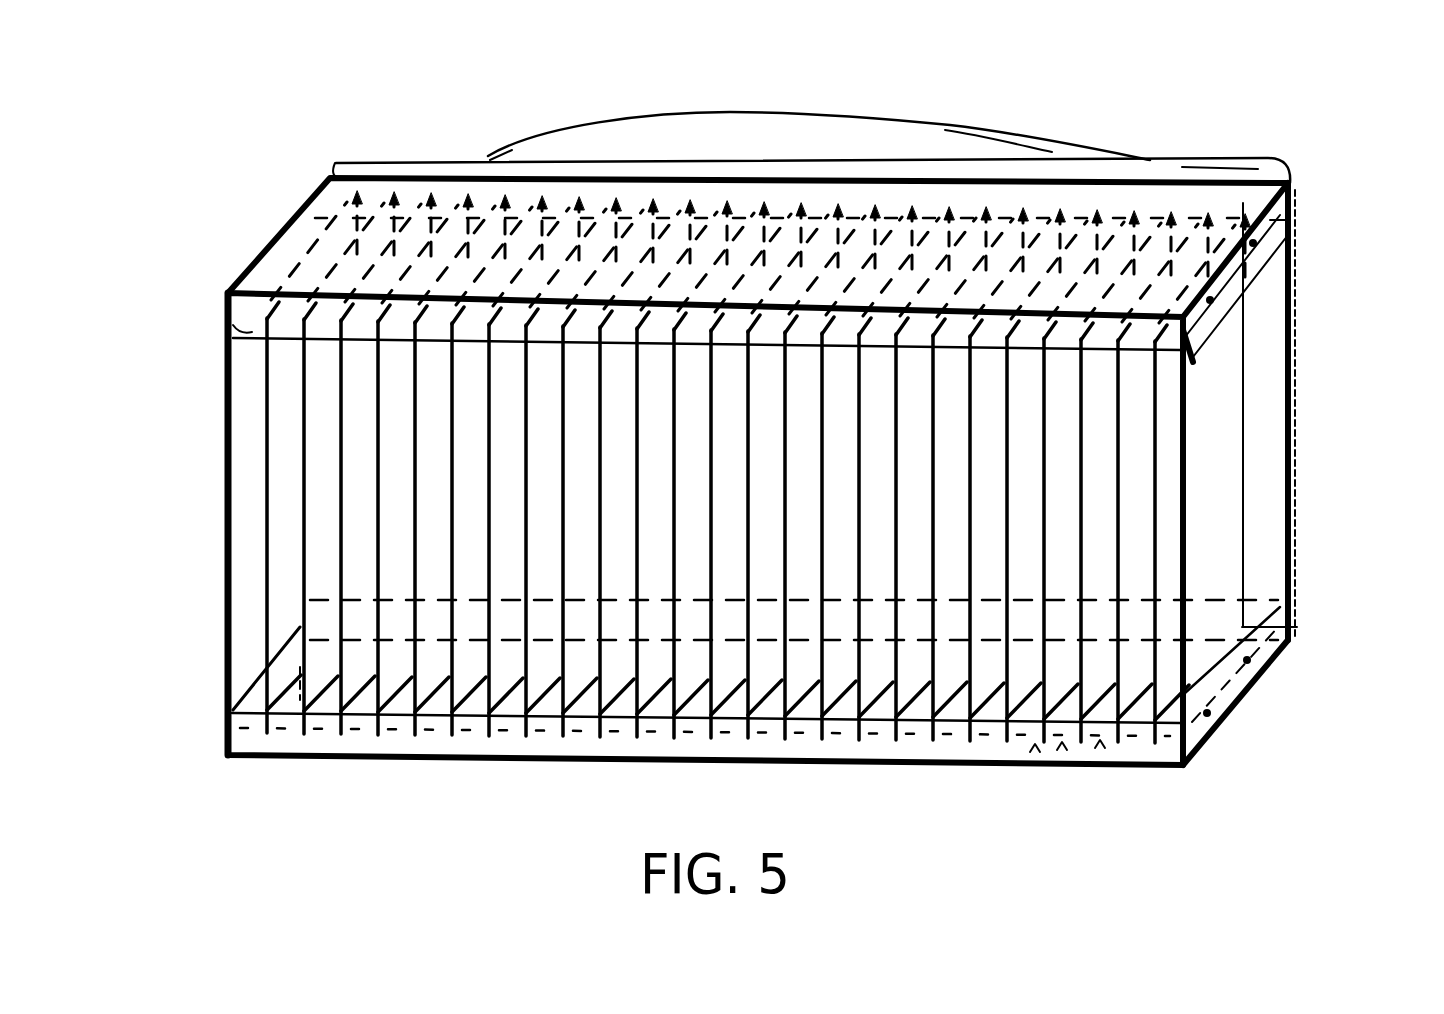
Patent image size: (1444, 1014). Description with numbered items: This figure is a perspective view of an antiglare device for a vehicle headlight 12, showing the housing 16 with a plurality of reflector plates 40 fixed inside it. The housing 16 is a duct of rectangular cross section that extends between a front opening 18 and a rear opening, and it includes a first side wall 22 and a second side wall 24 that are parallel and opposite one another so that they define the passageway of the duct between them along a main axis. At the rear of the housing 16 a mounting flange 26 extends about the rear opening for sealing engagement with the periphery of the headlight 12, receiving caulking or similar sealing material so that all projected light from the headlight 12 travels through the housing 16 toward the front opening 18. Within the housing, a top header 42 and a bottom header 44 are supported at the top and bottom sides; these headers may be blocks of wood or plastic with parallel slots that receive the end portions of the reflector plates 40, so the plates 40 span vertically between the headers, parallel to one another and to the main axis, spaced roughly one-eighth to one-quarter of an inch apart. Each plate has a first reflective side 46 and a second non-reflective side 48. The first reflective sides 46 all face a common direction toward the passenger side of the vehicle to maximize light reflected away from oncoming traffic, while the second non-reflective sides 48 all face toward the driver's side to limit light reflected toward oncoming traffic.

The headlight 12 is at (947, 137).
The housing 16 is at (288, 222).
The front opening 18 is at (618, 560).
The first side wall 22 is at (1274, 446).
The second side wall 24 is at (223, 495).
The mounting flange 26 is at (1182, 173).
The reflector plates 40 is at (1005, 500).
The top header 42 is at (227, 316).
The bottom header 44 is at (372, 716).
The first reflective side 46 is at (302, 542).
The second non-reflective side 48 is at (1123, 620).